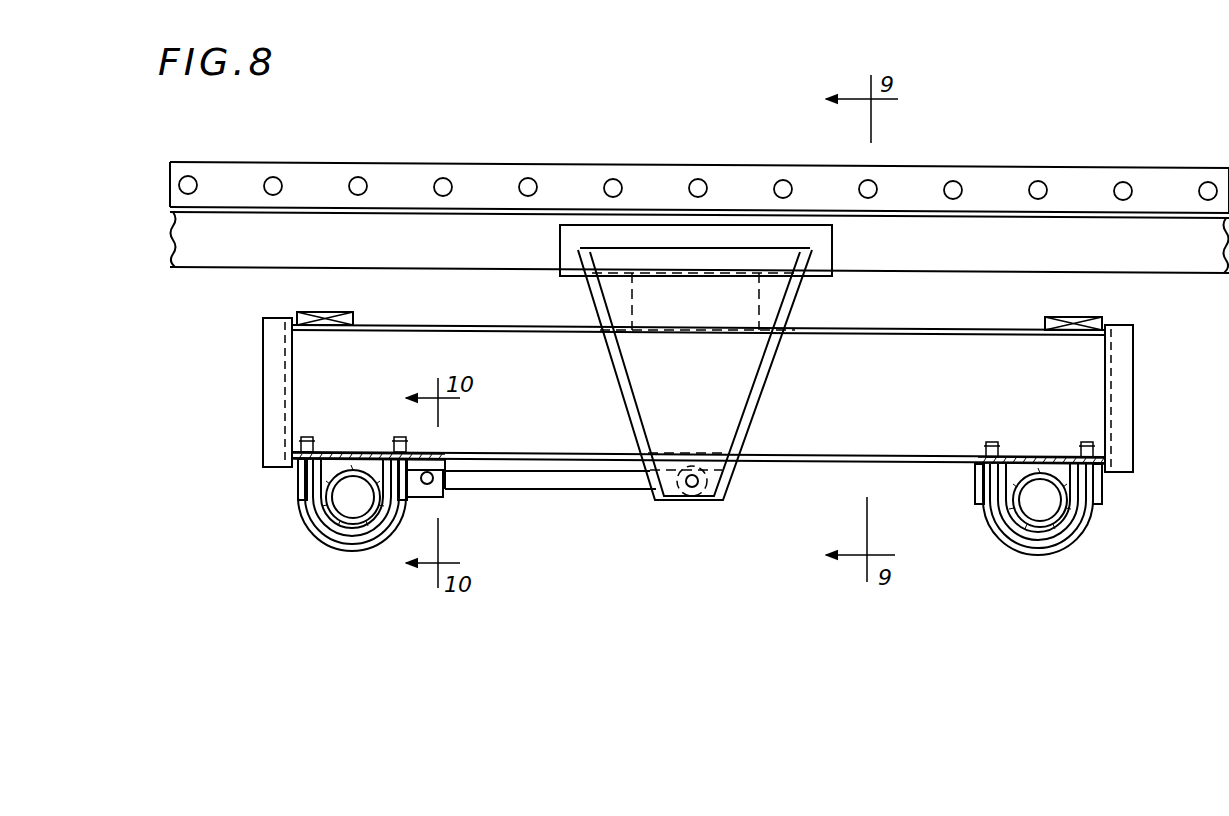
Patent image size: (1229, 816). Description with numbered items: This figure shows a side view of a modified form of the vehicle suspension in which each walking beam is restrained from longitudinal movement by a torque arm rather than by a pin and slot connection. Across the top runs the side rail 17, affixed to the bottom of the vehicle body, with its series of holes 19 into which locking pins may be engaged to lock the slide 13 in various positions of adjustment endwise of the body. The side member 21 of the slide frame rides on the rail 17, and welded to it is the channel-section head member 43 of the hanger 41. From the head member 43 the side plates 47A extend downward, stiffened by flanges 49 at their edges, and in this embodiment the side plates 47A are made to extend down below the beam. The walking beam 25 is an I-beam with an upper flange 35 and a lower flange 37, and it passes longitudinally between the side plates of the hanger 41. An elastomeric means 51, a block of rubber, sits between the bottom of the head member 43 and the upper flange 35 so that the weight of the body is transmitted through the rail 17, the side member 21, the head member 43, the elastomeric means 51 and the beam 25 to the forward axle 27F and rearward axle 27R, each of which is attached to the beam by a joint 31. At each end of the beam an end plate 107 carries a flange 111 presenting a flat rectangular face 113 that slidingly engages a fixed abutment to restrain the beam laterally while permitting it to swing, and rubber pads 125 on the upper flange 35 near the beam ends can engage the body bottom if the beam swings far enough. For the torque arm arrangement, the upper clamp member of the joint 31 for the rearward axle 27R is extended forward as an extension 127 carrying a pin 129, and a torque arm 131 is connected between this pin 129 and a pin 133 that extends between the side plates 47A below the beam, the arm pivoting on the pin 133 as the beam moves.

The slide 13 is at (1122, 146).
The side rail 17 is at (316, 162).
The holes 19 is at (527, 178).
The side member 21 is at (420, 262).
The walking beam 25 is at (790, 463).
The rearward axle 27R is at (350, 527).
The forward axle 27F is at (1036, 533).
The joint 31 is at (316, 541).
The upper flange 35 is at (992, 297).
The lower flange 37 is at (916, 460).
The hanger 41 is at (600, 350).
The head member 43 is at (835, 252).
The side plates 47A is at (750, 357).
The flanges 49 is at (755, 410).
The elastomeric means 51 is at (618, 302).
The end plate 107 is at (1103, 369).
The flange 111 is at (263, 379).
The flat rectangular face 113 is at (279, 445).
The rubber pads 125 is at (325, 312).
The extension 127 is at (430, 499).
The pin 129 is at (434, 481).
The torque arm 131 is at (568, 480).
The pin 133 is at (692, 488).